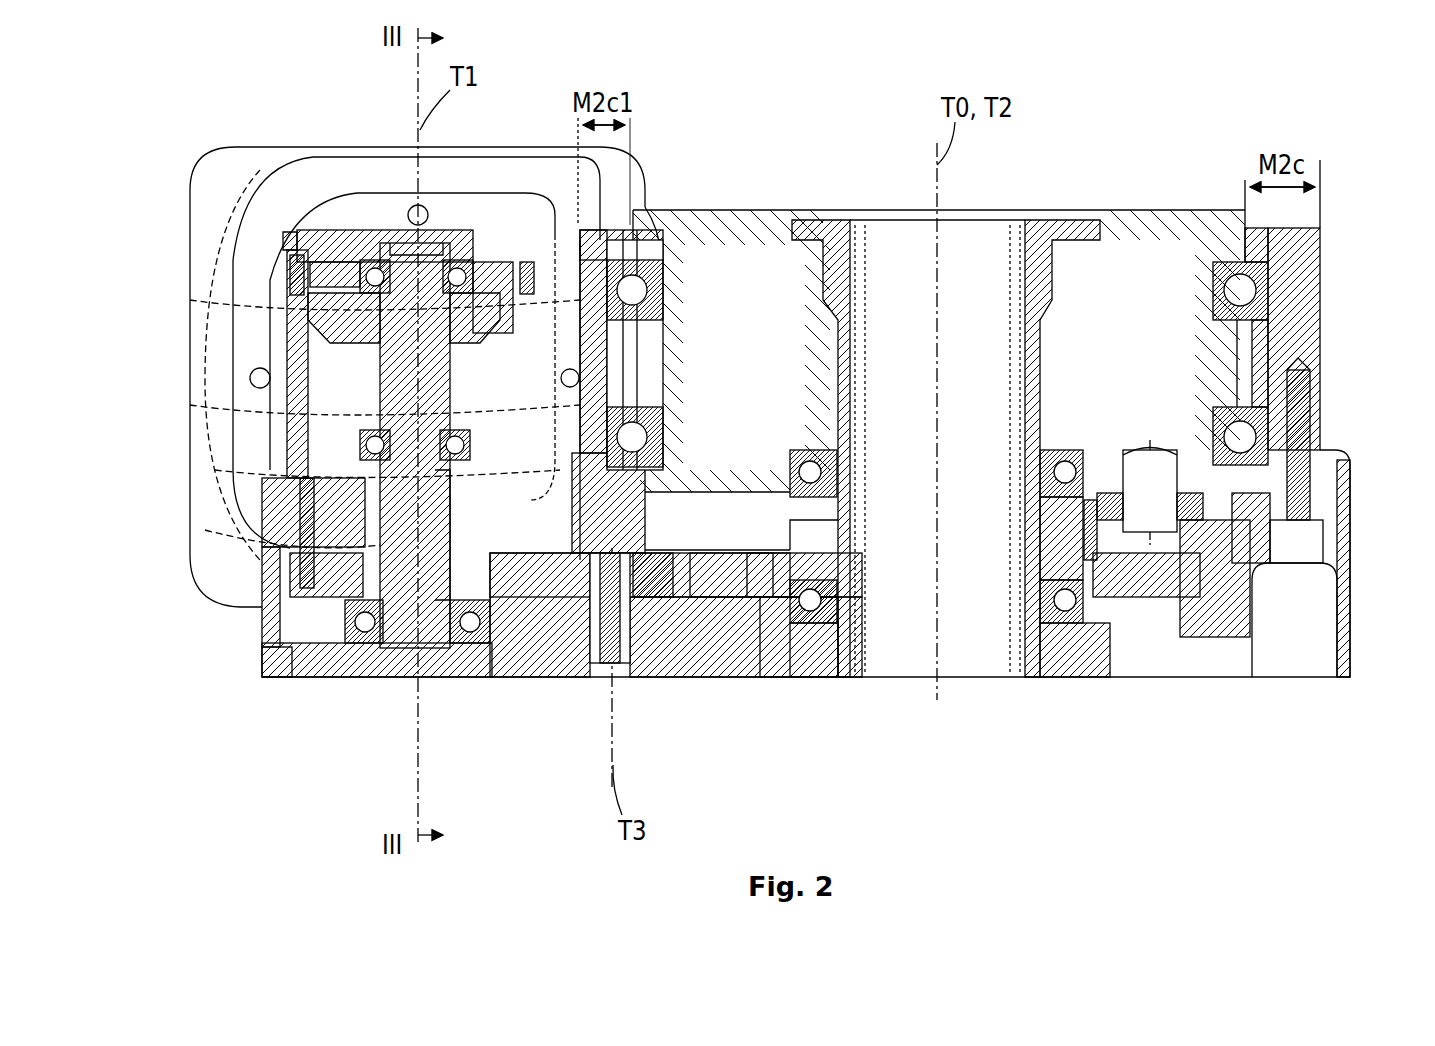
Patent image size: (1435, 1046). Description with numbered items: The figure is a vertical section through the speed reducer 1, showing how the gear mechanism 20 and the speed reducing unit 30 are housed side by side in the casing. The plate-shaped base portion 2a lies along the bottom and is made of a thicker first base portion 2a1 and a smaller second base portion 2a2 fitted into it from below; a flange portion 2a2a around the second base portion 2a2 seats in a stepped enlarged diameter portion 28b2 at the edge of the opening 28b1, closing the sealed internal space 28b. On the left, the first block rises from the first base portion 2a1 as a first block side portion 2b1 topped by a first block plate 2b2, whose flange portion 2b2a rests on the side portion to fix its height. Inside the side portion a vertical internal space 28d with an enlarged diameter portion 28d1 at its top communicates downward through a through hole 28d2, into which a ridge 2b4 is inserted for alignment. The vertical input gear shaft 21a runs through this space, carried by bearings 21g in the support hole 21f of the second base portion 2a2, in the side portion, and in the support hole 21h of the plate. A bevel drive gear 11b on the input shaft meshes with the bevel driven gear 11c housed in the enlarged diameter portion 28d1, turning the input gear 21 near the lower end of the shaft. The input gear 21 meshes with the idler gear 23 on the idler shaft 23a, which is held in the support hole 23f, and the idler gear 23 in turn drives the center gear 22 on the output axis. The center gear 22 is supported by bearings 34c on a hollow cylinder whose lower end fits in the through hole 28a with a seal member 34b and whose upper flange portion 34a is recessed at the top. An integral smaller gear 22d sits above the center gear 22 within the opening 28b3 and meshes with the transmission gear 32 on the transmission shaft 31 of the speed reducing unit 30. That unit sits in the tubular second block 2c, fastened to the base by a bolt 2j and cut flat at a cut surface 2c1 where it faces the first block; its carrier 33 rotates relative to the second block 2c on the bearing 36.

The speed reducer 1 is at (1228, 152).
The gear mechanism 20 is at (365, 800).
The input gear 21 is at (335, 618).
The input gear shaft 21a is at (412, 625).
The support hole 21f is at (355, 600).
The bearing 21g is at (368, 265).
The support hole 21h is at (457, 262).
The drive gear 11b is at (335, 310).
The driven gear 11c is at (480, 290).
The base portion 2a is at (1342, 640).
The first base portion 2a1 is at (265, 600).
The second base portion 2a2 is at (523, 680).
The flange portion 2a2a is at (770, 640).
The first block side portion 2b1 is at (296, 400).
The first block plate 2b2 is at (385, 228).
The flange portion 2b2a is at (288, 232).
The ridge 2b4 is at (295, 500).
The second block 2c is at (1320, 262).
The cut surface 2c1 is at (592, 245).
The bolt 2j is at (1305, 385).
The center gear 22 is at (722, 600).
The gear 22d is at (1090, 562).
The idler gear 23 is at (668, 605).
The idler shaft 23a is at (645, 600).
The support hole 23f is at (605, 660).
The through hole 28a is at (1065, 625).
The internal space 28b is at (1205, 585).
The opening 28b1 is at (272, 650).
The enlarged diameter portion 28b2 is at (805, 650).
The opening 28b3 is at (1252, 540).
The internal space 28d is at (350, 348).
The enlarged diameter portion 28d1 is at (293, 272).
The through hole 28d2 is at (375, 520).
The speed reducing unit 30 is at (738, 205).
The transmission shaft 31 is at (1152, 540).
The transmission gear 32 is at (1195, 512).
The carrier 33 is at (1172, 235).
The flange portion 34a is at (1042, 230).
The seal member 34b is at (858, 640).
The bearing 34c is at (815, 605).
The bearing 36 is at (640, 262).